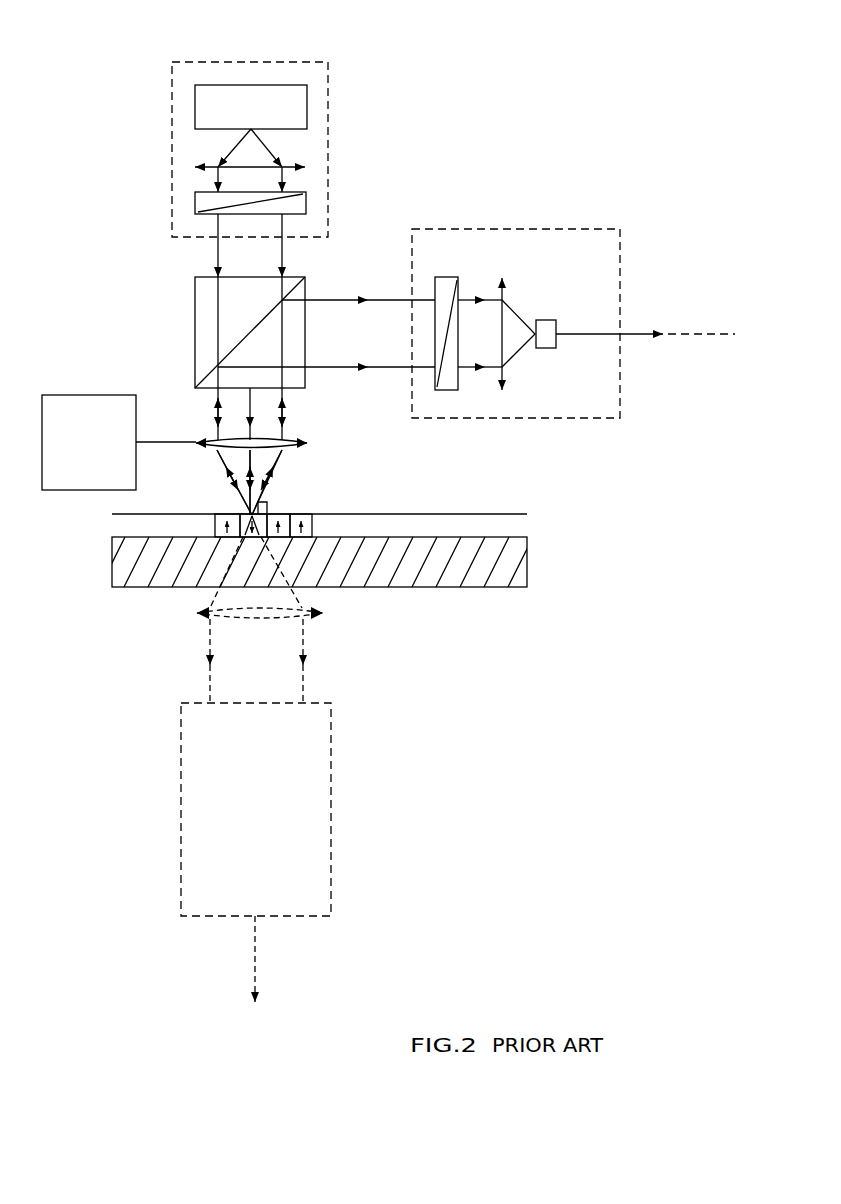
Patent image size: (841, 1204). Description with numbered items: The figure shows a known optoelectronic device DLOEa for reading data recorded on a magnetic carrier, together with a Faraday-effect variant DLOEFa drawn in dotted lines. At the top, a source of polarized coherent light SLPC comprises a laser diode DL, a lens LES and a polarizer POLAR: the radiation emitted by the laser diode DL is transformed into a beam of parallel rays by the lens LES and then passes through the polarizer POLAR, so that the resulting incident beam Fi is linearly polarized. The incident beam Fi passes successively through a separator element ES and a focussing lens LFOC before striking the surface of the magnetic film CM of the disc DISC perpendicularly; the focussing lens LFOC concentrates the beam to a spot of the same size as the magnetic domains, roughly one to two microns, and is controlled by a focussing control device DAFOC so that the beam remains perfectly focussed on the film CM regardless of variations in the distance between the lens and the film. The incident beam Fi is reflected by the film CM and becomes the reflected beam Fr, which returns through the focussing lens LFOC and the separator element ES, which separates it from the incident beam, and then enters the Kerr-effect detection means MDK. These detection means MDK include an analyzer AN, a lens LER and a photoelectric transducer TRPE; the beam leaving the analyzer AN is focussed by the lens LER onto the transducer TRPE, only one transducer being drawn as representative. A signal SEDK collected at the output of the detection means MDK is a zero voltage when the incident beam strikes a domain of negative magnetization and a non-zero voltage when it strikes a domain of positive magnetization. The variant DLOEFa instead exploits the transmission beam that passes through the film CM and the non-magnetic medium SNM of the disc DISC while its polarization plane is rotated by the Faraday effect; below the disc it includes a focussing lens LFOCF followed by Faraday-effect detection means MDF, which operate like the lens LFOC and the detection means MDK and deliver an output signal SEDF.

The source of polarized coherent light SLPC is at (323, 78).
The laser diode DL is at (251, 107).
The lens LES is at (259, 153).
The polarizer POLAR is at (306, 203).
The optoelectronic device of known construction DLOEa is at (443, 78).
The separator element ES is at (200, 329).
The incident beam Fi is at (213, 431).
The reflected beam Fr is at (264, 359).
The Kerr effect detection means MDK is at (574, 238).
The analyzer AN is at (450, 322).
The lens LER is at (519, 317).
The photoelectric transducer TRPE is at (546, 320).
The signal SEDK is at (645, 320).
The focussing control device DAFOC is at (119, 442).
The focussing lens LFOC is at (280, 443).
The magnetic film CM is at (517, 532).
The disc DISC is at (112, 570).
The non-magnetic medium SNM is at (525, 568).
The focussing lens LFOCF is at (188, 605).
The Faraday effect means of detection MDF is at (346, 733).
The signal SEDF is at (287, 959).
The Faraday effect variation of the device DLOEFa is at (390, 848).